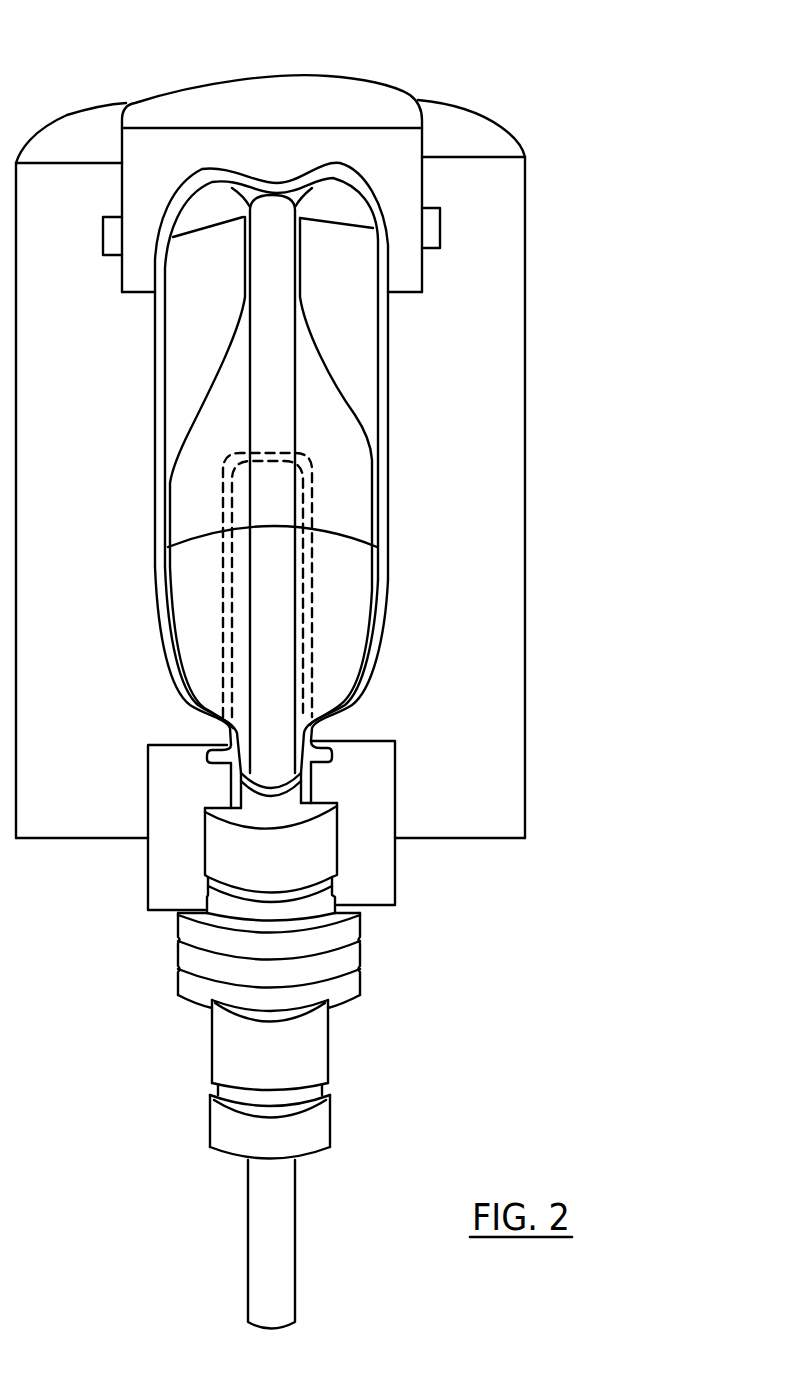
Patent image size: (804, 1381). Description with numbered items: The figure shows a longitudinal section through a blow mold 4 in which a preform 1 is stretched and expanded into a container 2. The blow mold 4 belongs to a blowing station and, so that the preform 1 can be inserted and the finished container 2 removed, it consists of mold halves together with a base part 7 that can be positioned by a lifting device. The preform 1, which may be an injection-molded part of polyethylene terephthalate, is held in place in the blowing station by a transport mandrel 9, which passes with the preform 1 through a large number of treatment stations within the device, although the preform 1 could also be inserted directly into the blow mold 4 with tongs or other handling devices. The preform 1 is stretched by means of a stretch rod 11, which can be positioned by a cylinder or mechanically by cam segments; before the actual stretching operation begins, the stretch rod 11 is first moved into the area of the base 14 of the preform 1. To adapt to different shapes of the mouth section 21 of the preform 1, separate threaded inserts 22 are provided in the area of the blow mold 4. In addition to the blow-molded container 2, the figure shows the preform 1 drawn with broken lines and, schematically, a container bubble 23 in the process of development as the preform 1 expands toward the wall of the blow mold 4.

The preform 1 is at (310, 625).
The container 2 is at (383, 397).
The blow mold 4 is at (478, 463).
The base part 7 is at (360, 95).
The transport mandrel 9 is at (347, 977).
The stretch rod 11 is at (247, 1257).
The base 14 is at (330, 447).
The mouth section 21 is at (313, 772).
The threaded inserts 22 is at (378, 865).
The container bubble 23 is at (327, 353).